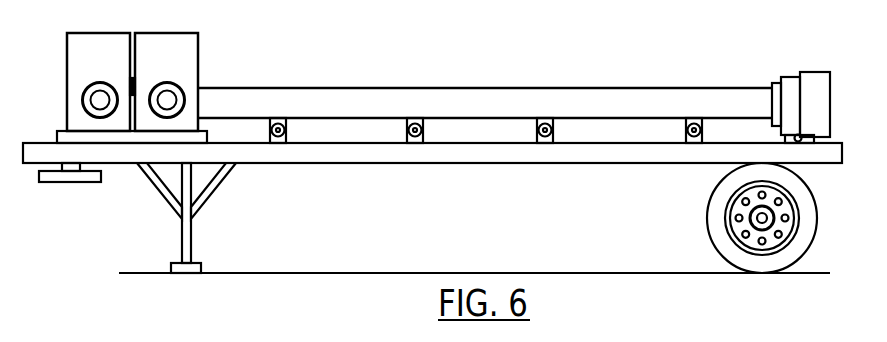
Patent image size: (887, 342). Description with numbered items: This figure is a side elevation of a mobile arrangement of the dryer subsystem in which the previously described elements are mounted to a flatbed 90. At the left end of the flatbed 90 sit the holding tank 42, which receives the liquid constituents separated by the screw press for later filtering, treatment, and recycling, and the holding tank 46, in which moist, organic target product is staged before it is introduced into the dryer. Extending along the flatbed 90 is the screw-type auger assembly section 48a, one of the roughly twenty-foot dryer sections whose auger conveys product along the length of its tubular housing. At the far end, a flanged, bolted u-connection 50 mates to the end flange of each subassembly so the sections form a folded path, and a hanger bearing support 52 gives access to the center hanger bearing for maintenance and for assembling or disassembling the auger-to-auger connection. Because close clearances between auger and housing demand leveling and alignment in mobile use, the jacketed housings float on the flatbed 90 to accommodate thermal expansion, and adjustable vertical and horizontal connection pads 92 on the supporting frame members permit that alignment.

The holding tank 42 is at (112, 67).
The holding tank 46 is at (179, 67).
The screw-type auger assembly section 48a is at (467, 100).
The u-connection 50 is at (792, 79).
The hanger bearing support 52 is at (817, 72).
The flatbed 90 is at (625, 152).
The adjustable vertical and horizontal connection pads 92 is at (278, 137).